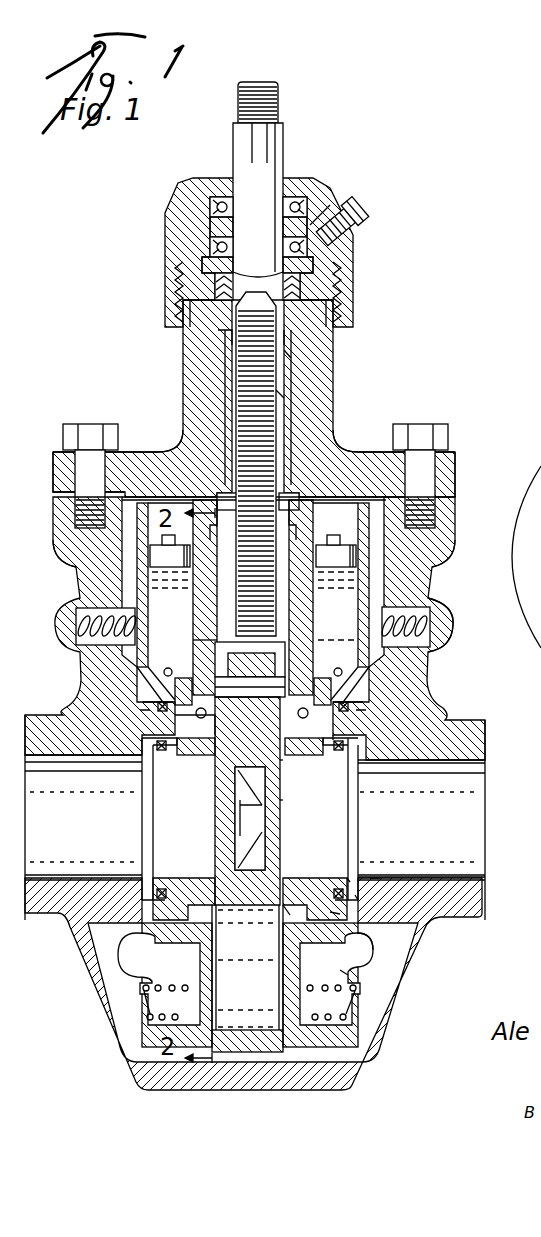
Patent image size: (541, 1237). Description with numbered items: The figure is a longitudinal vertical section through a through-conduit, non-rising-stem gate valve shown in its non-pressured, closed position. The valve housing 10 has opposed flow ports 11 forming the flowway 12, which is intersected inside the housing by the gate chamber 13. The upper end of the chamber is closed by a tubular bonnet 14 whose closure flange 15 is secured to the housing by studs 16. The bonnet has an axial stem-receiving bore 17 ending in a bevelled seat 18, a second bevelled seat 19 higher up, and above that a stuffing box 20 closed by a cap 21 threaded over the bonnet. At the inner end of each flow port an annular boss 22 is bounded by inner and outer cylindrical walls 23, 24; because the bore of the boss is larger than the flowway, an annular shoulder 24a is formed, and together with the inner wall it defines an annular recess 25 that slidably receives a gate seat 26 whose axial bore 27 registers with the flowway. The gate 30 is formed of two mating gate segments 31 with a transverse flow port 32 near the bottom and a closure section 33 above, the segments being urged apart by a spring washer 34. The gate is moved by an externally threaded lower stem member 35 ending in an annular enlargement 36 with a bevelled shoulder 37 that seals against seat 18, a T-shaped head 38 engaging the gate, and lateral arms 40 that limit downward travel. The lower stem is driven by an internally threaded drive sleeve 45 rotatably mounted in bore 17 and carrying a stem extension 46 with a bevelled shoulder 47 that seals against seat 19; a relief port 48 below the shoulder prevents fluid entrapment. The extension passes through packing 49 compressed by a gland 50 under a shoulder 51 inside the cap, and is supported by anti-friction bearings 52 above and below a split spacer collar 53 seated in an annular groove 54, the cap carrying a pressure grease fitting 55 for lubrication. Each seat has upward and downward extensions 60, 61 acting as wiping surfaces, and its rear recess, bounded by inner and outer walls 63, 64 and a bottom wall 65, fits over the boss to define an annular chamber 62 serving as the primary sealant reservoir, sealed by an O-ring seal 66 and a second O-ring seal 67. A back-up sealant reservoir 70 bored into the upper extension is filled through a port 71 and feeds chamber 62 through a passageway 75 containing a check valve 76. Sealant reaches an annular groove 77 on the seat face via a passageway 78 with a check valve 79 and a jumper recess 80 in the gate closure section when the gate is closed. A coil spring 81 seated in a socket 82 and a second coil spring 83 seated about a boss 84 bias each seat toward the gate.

The valve housing 10 is at (430, 582).
The flow ports 11 is at (48, 705).
The flowway 12 is at (490, 878).
The gate chamber 13 is at (430, 562).
The tubular bonnet 14 is at (320, 378).
The closure flange 15 is at (455, 465).
The studs 16 is at (448, 440).
The stem-receiving bore 17 is at (292, 362).
The seat 18 is at (320, 490).
The seat 19 is at (300, 304).
The stuffing box 20 is at (335, 282).
The cap 21 is at (348, 252).
The annular boss 22 is at (337, 912).
The inner cylindrical wall 23 is at (356, 895).
The outer cylindrical wall 24 is at (373, 955).
The annular shoulder 24a is at (378, 880).
The annular recess 25 is at (335, 738).
The gate seat 26 is at (150, 880).
The axial bore 27 is at (300, 880).
The gate 30 is at (272, 822).
The gate segments 31 is at (215, 792).
The transverse flow port 32 is at (263, 1035).
The closure section 33 is at (283, 805).
The spring washer 34 is at (240, 832).
The lower stem member 35 is at (235, 470).
The annular enlargement 36 is at (196, 632).
The annular shoulder 37 is at (196, 612).
The T-shaped head 38 is at (215, 684).
The lateral arms 40 is at (228, 658).
The drive sleeve 45 is at (284, 398).
The stem extension 46 is at (268, 261).
The bevelled shoulder 47 is at (290, 350).
The relief port 48 is at (215, 337).
The packing 49 is at (218, 292).
The gland 50 is at (202, 263).
The shoulder 51 is at (210, 246).
The anti-friction bearings 52 is at (212, 208).
The split spacer collar 53 is at (302, 222).
The annular groove 54 is at (256, 224).
The pressure grease fitting 55 is at (362, 214).
The upward extension 60 is at (300, 520).
The downward extension 61 is at (247, 1007).
The annular chamber 62 is at (297, 968).
The inner wall 63 is at (300, 895).
The outer wall 64 is at (318, 940).
The bottom wall 65 is at (307, 918).
The O-ring seal 66 is at (348, 880).
The second O-ring seal 67 is at (348, 972).
The sealant reservoir 70 is at (366, 518).
The port 71 is at (345, 690).
The passageway 75 is at (335, 705).
The check valve 76 is at (340, 712).
The annular groove 77 is at (200, 890).
The passageway 78 is at (300, 760).
The check valve 79 is at (302, 705).
The jumper recess 80 is at (222, 760).
The coil spring 81 is at (445, 620).
The socket 82 is at (395, 652).
The second coil spring 83 is at (346, 1018).
The boss 84 is at (350, 1000).